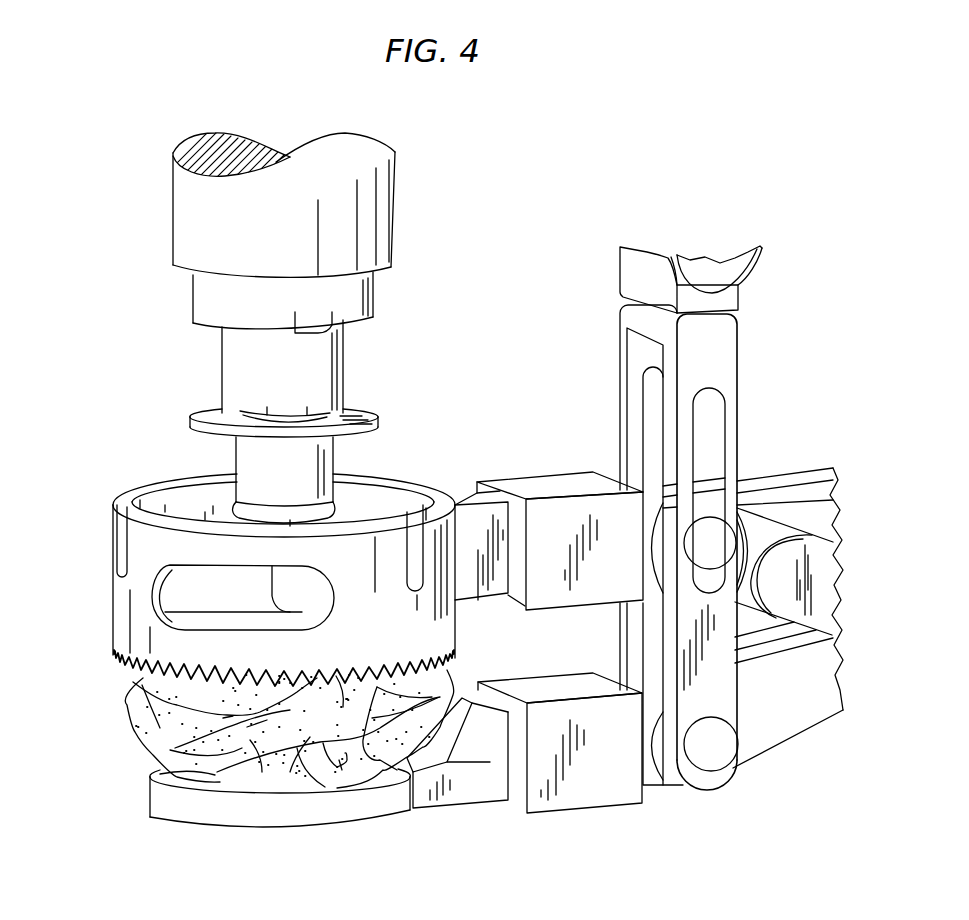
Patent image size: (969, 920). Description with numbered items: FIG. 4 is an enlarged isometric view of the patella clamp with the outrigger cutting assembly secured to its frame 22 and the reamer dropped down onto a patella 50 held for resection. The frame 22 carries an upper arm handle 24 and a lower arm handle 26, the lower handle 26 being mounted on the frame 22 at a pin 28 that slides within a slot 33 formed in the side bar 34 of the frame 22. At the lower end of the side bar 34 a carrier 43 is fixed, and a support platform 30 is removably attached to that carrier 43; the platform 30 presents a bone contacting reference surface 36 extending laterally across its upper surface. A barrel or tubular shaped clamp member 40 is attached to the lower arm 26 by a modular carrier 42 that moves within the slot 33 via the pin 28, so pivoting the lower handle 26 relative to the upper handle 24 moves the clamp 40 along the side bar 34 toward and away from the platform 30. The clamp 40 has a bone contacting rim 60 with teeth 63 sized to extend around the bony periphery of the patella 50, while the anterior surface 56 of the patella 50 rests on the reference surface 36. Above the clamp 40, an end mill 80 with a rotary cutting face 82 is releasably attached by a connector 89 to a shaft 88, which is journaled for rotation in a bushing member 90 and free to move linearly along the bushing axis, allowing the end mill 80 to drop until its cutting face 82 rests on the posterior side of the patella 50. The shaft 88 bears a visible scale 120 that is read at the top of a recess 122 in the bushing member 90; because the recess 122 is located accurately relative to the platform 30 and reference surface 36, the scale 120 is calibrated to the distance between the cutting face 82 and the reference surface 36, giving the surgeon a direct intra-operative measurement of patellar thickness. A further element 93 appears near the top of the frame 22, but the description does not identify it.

The frame 22 is at (722, 360).
The upper arm handle 24 is at (761, 733).
The lower arm handle 26 is at (812, 555).
The pin 28 is at (723, 530).
The support platform 30 is at (327, 370).
The slot 33 is at (700, 425).
The side bar 34 is at (307, 389).
The bone contacting reference surface 36 is at (165, 772).
The clamp member 40 is at (238, 574).
The modular carrier 42 is at (567, 520).
The carrier 43 is at (590, 812).
The patella 50 is at (100, 718).
The anterior surface 56 is at (260, 777).
The bone contacting rim 60 is at (113, 637).
The teeth 63 is at (120, 660).
The end mill 80 is at (215, 587).
The rotary cutting face 82 is at (215, 610).
The shaft 88 is at (320, 385).
The connector 89 is at (317, 464).
The bushing member 90 is at (397, 227).
The saddle clamp 93 is at (755, 272).
The visible scale 120 is at (285, 362).
The recess 122 is at (325, 333).